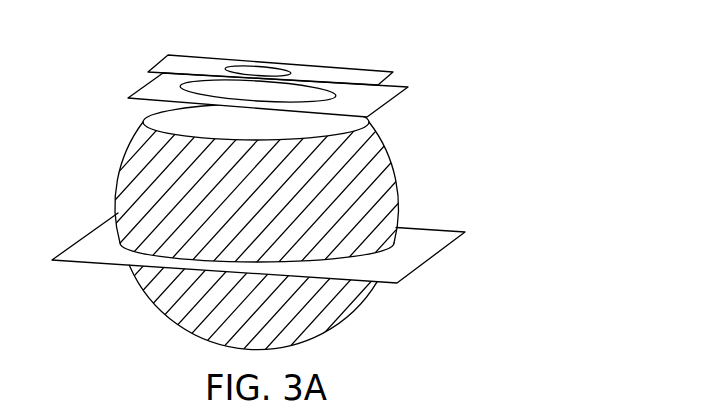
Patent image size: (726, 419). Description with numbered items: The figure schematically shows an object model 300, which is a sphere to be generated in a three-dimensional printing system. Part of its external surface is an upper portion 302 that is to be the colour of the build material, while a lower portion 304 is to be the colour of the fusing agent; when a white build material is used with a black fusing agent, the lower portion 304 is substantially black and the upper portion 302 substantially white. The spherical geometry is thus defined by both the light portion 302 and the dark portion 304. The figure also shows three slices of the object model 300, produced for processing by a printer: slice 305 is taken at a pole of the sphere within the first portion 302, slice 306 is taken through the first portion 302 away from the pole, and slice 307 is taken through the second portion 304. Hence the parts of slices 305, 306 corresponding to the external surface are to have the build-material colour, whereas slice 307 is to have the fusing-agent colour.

The object model 300 is at (532, 132).
The portion 302 is at (150, 113).
The portion 304 is at (340, 324).
The slice 305 is at (368, 67).
The slice 306 is at (393, 98).
The slice 307 is at (437, 250).